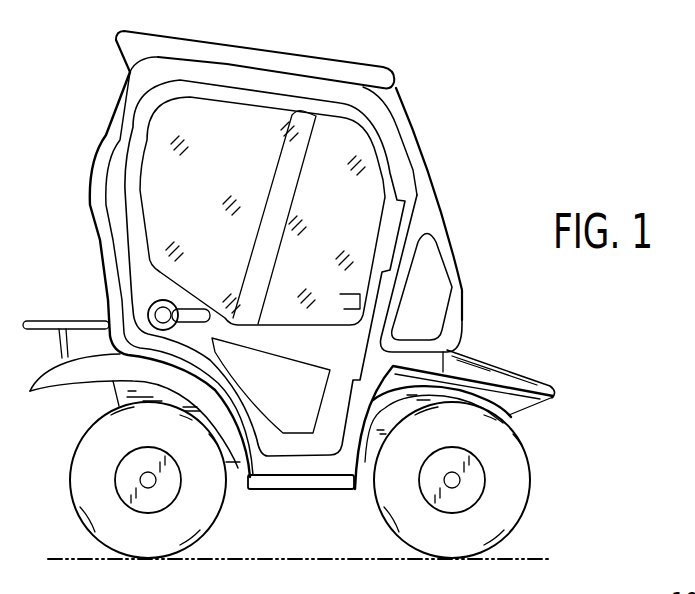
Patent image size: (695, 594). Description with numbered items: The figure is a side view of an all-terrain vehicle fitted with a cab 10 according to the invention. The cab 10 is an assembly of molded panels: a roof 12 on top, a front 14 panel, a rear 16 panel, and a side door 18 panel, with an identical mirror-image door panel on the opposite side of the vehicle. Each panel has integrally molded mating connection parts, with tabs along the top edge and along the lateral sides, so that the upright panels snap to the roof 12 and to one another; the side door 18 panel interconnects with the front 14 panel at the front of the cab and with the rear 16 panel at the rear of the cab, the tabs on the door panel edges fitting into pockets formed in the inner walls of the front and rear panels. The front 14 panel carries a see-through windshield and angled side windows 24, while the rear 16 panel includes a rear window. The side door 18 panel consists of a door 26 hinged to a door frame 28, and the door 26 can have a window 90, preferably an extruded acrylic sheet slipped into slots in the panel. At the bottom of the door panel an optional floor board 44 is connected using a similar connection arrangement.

The cab 10 is at (486, 93).
The roof panel 12 is at (291, 54).
The front panel 14 is at (427, 219).
The rear panel 16 is at (91, 184).
The side door panel 18 is at (123, 226).
The angled side window 24 is at (430, 312).
The door 26 is at (385, 168).
The door frame 28 is at (398, 238).
The floor board 44 is at (287, 486).
The window 90 is at (157, 148).